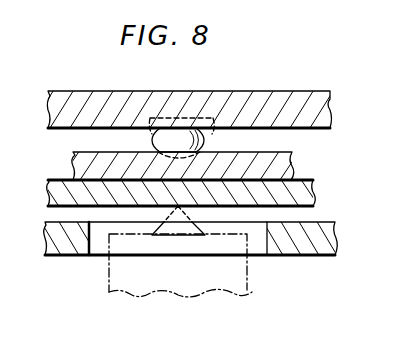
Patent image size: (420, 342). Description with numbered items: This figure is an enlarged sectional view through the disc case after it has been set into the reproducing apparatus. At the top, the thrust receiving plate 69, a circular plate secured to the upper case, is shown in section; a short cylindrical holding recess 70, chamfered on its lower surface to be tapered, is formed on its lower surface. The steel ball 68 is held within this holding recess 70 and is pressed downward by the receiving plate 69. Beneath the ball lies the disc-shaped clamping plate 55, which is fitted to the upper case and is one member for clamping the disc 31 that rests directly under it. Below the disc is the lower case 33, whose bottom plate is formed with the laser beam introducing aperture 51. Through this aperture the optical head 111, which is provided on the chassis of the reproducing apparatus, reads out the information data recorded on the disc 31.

The thrust receiving plate 69 is at (290, 93).
The holding recess 70 is at (214, 118).
The steel ball 68 is at (205, 140).
The clamping plate 55 is at (293, 166).
The disc 31 is at (314, 193).
The lower case 33 is at (337, 238).
The laser beam introducing aperture 51 is at (268, 250).
The optical head 111 is at (266, 302).